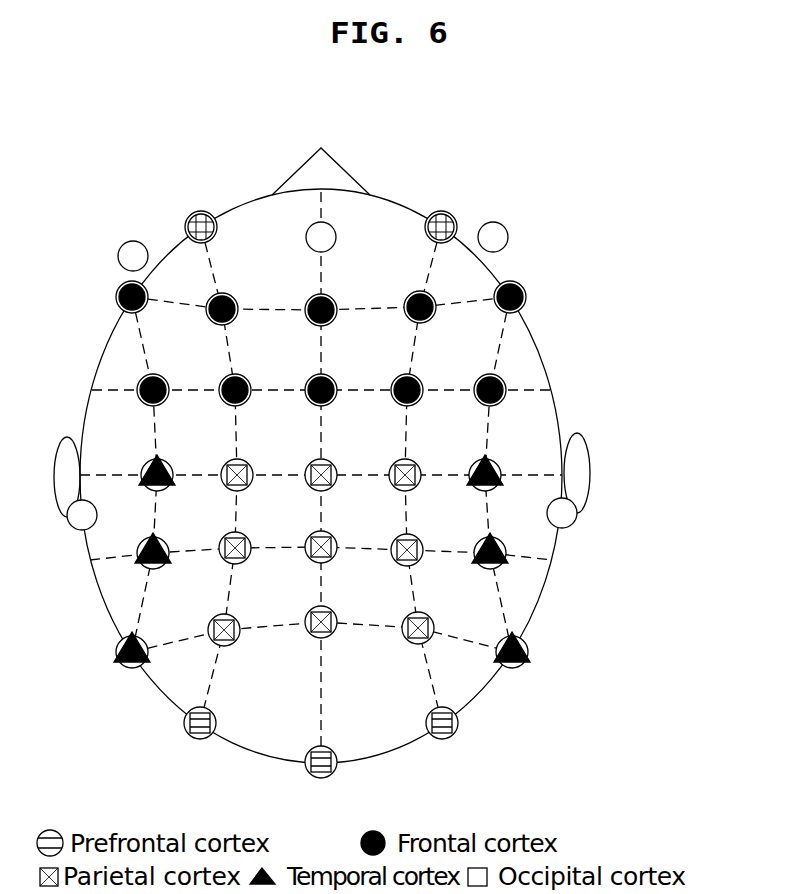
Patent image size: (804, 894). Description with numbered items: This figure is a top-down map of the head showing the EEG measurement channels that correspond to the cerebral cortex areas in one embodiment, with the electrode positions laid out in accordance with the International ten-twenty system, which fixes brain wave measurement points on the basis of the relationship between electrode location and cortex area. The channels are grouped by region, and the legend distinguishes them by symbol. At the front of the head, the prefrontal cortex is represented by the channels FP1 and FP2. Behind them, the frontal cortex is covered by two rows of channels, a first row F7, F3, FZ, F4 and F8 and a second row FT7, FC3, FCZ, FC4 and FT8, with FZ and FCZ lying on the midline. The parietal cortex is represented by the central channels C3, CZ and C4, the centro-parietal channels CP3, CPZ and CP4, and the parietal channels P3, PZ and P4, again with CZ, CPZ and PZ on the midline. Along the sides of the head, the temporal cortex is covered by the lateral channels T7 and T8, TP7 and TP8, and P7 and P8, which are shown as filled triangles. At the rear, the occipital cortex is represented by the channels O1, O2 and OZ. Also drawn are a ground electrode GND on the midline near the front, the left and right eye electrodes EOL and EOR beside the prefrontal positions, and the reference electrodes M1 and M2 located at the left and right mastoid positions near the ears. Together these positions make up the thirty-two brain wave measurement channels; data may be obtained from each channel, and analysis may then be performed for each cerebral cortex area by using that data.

The prefrontal cortex measurement channel FP1 is at (196, 243).
The prefrontal cortex measurement channel FP2 is at (448, 244).
The ground electrode GND is at (336, 250).
The left electrooculogram electrode EOL is at (139, 241).
The right electrooculogram electrode EOR is at (497, 221).
The frontal cortex measurement channel F7 is at (144, 308).
The frontal cortex measurement channel F3 is at (231, 321).
The frontal cortex measurement channel FZ is at (327, 324).
The frontal cortex measurement channel F4 is at (425, 320).
The frontal cortex measurement channel F8 is at (512, 314).
The frontal cortex measurement channel FT7 is at (141, 402).
The frontal cortex measurement channel FC3 is at (248, 402).
The frontal cortex measurement channel FCZ is at (334, 402).
The frontal cortex measurement channel FC4 is at (418, 402).
The frontal cortex measurement channel FT8 is at (502, 402).
The temporal cortex measurement channel T7 is at (152, 484).
The temporal cortex measurement channel T8 is at (494, 485).
The temporal cortex measurement channel TP7 is at (155, 565).
The temporal cortex measurement channel TP8 is at (490, 565).
The temporal cortex measurement channel P7 is at (117, 645).
The temporal cortex measurement channel P8 is at (525, 646).
The parietal cortex measurement channel C3 is at (243, 486).
The parietal cortex measurement channel CZ is at (329, 486).
The parietal cortex measurement channel C4 is at (412, 486).
The parietal cortex measurement channel CP3 is at (236, 563).
The parietal cortex measurement channel CPZ is at (315, 563).
The parietal cortex measurement channel CP4 is at (408, 564).
The parietal cortex measurement channel P3 is at (214, 619).
The parietal cortex measurement channel PZ is at (334, 614).
The parietal cortex measurement channel P4 is at (428, 618).
The occipital cortex measurement channel O1 is at (200, 737).
The occipital cortex measurement channel O2 is at (442, 737).
The occipital cortex measurement channel OZ is at (321, 776).
The left mastoid reference electrode M1 is at (73, 538).
The right mastoid reference electrode M2 is at (579, 537).